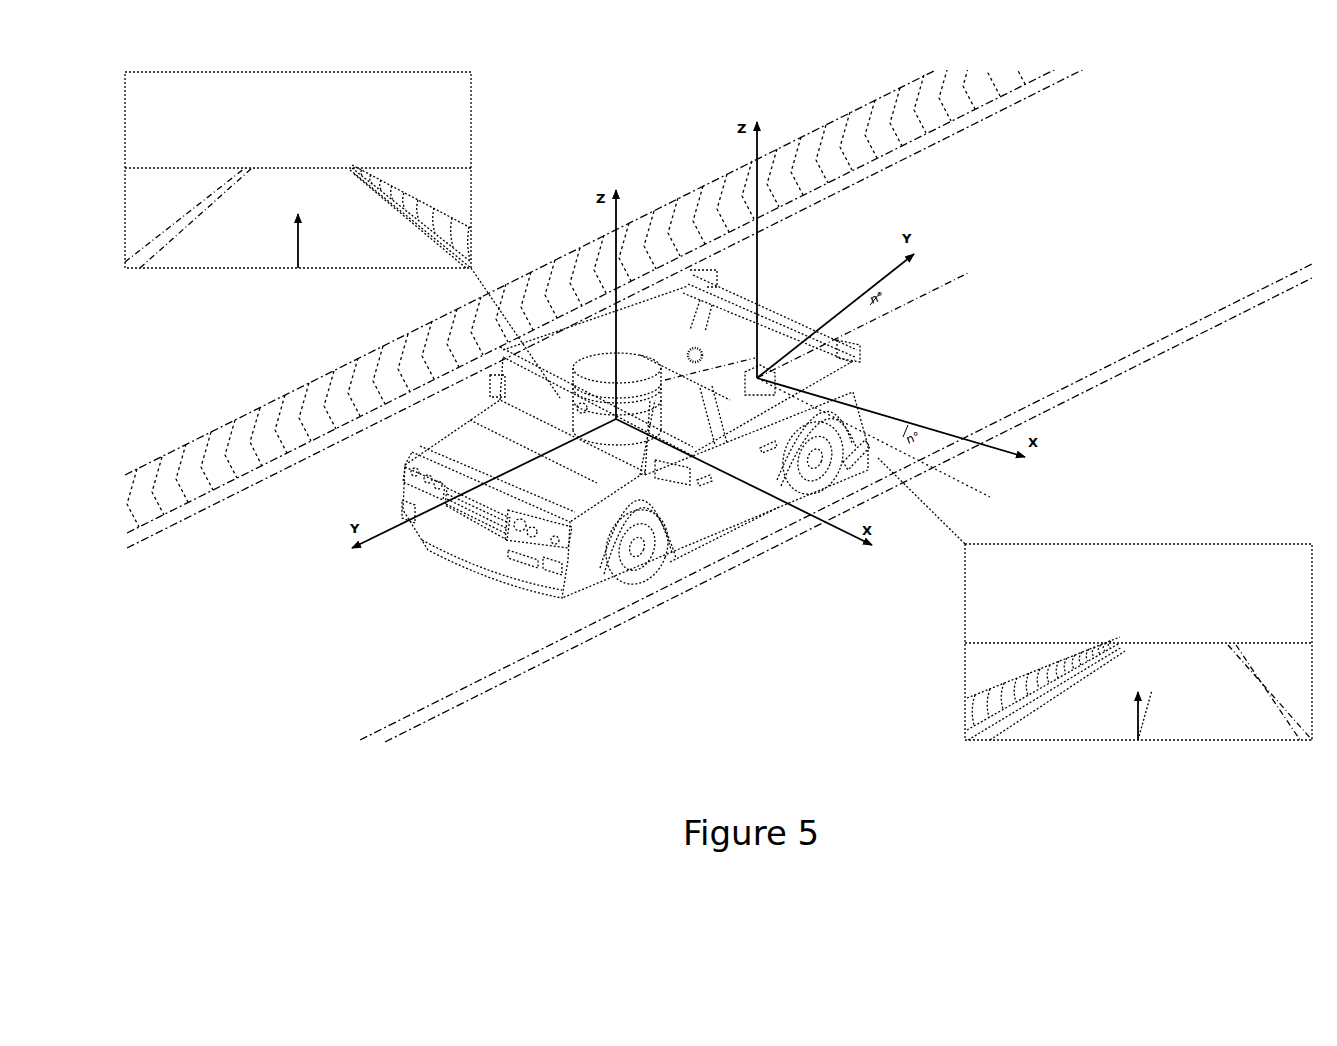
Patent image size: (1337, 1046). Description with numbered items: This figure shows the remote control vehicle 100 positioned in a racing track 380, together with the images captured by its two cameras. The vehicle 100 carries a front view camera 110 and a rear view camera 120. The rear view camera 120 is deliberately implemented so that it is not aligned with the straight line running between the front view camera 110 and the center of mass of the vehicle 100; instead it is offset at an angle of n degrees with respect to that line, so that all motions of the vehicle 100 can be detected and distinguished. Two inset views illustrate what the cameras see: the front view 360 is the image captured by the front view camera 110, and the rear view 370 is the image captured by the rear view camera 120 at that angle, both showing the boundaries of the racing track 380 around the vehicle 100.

The vehicle 100 is at (638, 158).
The front view camera 110 is at (596, 348).
The rear view camera 120 is at (774, 328).
The front view 360 is at (314, 124).
The rear view 370 is at (1168, 606).
The racing track 380 is at (1105, 212).